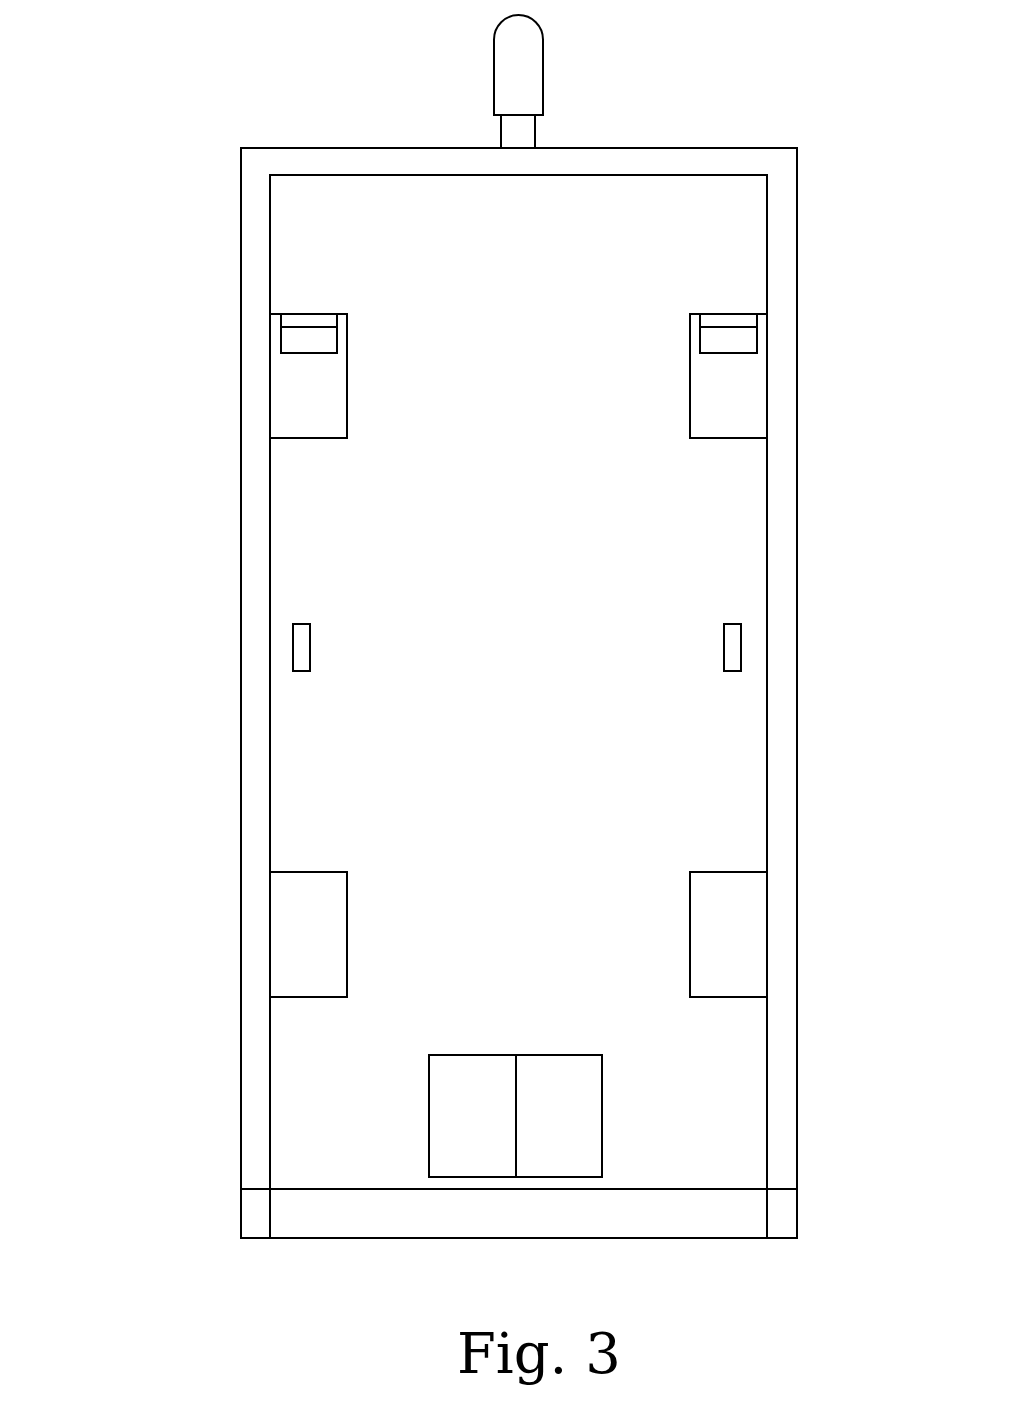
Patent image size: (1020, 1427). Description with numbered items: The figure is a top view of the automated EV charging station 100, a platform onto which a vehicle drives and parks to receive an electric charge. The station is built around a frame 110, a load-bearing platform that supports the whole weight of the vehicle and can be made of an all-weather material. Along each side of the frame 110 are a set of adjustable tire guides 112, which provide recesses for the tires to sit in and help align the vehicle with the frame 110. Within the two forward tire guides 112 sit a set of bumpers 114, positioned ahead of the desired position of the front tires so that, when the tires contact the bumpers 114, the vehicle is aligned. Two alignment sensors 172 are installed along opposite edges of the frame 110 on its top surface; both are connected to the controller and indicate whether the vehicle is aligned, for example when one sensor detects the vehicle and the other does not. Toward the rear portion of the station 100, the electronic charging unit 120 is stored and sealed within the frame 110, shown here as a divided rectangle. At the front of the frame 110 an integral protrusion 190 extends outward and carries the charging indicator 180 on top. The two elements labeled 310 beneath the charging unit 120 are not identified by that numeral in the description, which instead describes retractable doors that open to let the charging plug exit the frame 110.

The automated EV charging station 100 is at (120, 223).
The frame 110 is at (784, 1116).
The adjustable tire guides 112 is at (283, 398).
The bumpers 114 is at (303, 335).
The electronic charging unit 120 is at (583, 1167).
The alignment sensor 172 is at (300, 623).
The charging indicator 180 is at (543, 77).
The protrusion 190 is at (535, 130).
The connector 310 is at (477, 1177).